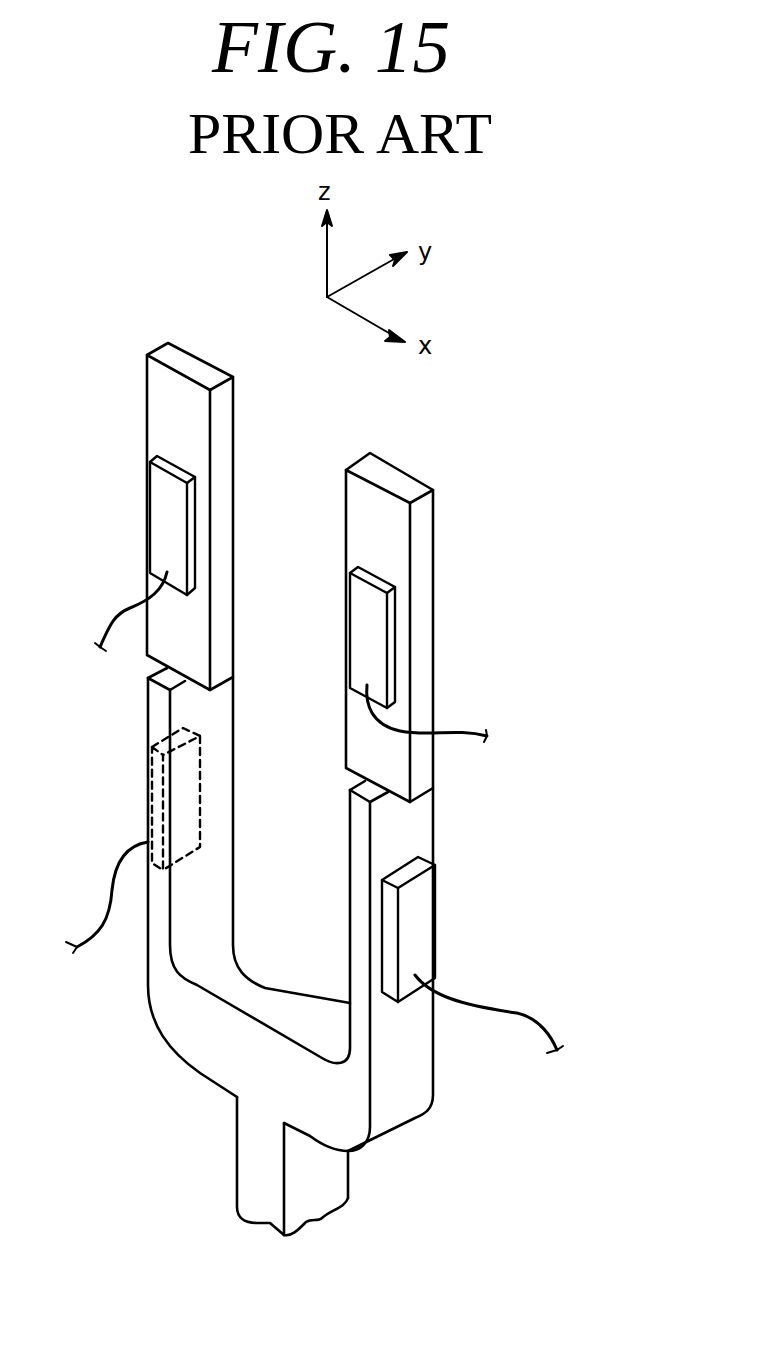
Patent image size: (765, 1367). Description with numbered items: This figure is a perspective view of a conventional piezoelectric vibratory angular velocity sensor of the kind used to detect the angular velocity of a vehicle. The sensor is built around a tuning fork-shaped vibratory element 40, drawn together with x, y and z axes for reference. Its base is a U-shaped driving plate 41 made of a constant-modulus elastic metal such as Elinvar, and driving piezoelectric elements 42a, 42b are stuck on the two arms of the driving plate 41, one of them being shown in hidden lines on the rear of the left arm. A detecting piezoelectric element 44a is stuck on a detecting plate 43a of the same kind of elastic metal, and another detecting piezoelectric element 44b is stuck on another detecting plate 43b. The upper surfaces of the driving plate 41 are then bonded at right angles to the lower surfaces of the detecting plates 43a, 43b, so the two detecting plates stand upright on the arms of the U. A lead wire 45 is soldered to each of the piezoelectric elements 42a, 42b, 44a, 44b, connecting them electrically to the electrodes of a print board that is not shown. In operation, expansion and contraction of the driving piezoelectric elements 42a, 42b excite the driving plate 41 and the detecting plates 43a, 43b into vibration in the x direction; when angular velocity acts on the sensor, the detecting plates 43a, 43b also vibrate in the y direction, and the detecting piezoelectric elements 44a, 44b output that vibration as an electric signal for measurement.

The vibratory element 40 is at (435, 837).
The driving plate 41 is at (425, 1033).
The driving piezoelectric element 42a is at (148, 795).
The driving piezoelectric element 42b is at (425, 922).
The detecting plate 43a is at (223, 502).
The detecting plate 43b is at (425, 550).
The detecting piezoelectric element 44a is at (158, 533).
The detecting piezoelectric element 44b is at (367, 637).
The lead wire 45 is at (108, 623).